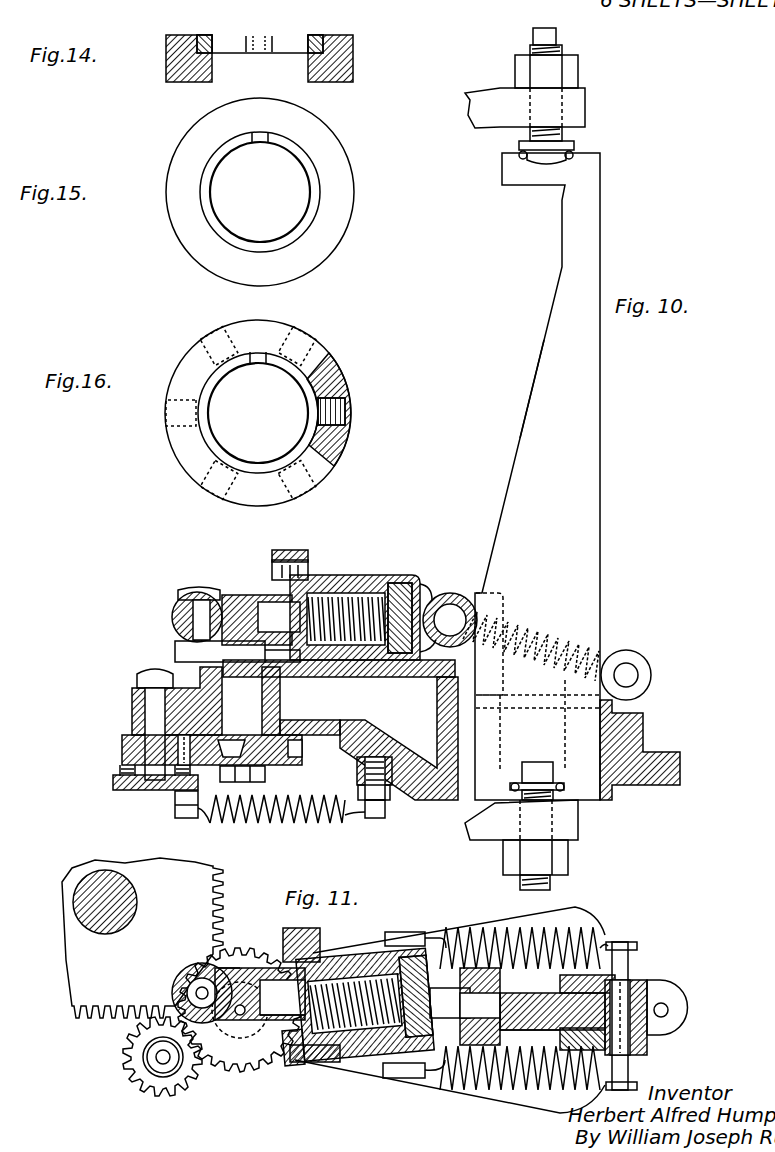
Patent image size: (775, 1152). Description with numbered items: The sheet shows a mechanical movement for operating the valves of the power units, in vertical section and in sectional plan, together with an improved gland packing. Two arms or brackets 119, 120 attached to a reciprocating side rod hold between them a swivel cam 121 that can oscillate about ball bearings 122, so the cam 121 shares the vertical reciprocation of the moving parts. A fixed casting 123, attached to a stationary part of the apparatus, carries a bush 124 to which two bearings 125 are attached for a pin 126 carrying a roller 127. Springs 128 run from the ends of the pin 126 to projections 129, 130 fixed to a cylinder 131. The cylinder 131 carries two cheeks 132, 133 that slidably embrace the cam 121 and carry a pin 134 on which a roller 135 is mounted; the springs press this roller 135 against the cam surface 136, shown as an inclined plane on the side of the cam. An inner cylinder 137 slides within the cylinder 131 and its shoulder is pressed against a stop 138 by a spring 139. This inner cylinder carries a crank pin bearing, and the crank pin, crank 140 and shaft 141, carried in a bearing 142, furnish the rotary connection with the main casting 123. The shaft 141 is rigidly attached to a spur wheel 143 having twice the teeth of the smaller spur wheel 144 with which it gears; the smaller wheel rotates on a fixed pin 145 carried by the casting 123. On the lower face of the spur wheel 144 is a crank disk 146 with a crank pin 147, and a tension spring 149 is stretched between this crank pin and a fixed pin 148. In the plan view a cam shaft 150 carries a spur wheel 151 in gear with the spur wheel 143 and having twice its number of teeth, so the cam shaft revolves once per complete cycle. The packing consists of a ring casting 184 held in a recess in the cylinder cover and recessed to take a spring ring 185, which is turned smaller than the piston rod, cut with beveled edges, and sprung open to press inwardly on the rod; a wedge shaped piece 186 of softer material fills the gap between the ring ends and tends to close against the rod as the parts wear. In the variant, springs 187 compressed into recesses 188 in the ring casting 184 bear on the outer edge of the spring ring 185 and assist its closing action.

In FIG. 10, the arm or bracket 119 is at (585, 107).
In FIG. 10, the arm or bracket 120 is at (565, 828).
In FIG. 10, the swivel cam 121 is at (537, 476).
In FIG. 11, the swivel cam 121 is at (543, 1047).
In FIG. 10, the ball bearing 122 is at (590, 153).
In FIG. 10, the fixed casting 123 is at (340, 730).
In FIG. 11, the fixed casting 123 is at (360, 955).
In FIG. 10, the bush 124 is at (645, 736).
In FIG. 11, the bearing 125 is at (625, 962).
In FIG. 10, the pin 126 is at (628, 668).
In FIG. 11, the pin 126 is at (625, 1020).
In FIG. 10, the roller 127 is at (655, 675).
In FIG. 11, the roller 127 is at (655, 1000).
In FIG. 10, the spring 128 is at (540, 640).
In FIG. 11, the spring 128 is at (590, 936).
In FIG. 11, the projection 129 is at (398, 931).
In FIG. 11, the projection 130 is at (402, 1068).
In FIG. 10, the cylinder 131 is at (360, 580).
In FIG. 11, the cylinder 131 is at (305, 1058).
In FIG. 10, the cheek 132 is at (470, 598).
In FIG. 11, the cheek 132 is at (537, 1009).
In FIG. 11, the cheek 133 is at (552, 1029).
In FIG. 10, the pin 134 is at (480, 612).
In FIG. 11, the pin 134 is at (433, 940).
In FIG. 10, the roller 135 is at (445, 600).
In FIG. 11, the roller 135 is at (428, 1078).
In FIG. 10, the cam surface 136 is at (533, 386).
In FIG. 10, the inner cylinder 137 is at (322, 578).
In FIG. 11, the inner cylinder 137 is at (328, 1055).
In FIG. 10, the stop 138 is at (290, 558).
In FIG. 10, the spring 139 is at (398, 590).
In FIG. 11, the spring 139 is at (400, 1040).
In FIG. 10, the crank 140 is at (180, 650).
In FIG. 11, the crank 140 is at (265, 1032).
In FIG. 10, the shaft 141 is at (282, 692).
In FIG. 11, the shaft 141 is at (282, 1065).
In FIG. 10, the bearing 142 is at (284, 716).
In FIG. 11, the bearing 142 is at (236, 1062).
In FIG. 10, the spur wheel 143 is at (302, 752).
In FIG. 11, the spur wheel 143 is at (268, 950).
In FIG. 10, the spur wheel 144 is at (122, 750).
In FIG. 11, the spur wheel 144 is at (158, 1085).
In FIG. 10, the fixed pin 145 is at (150, 742).
In FIG. 11, the fixed pin 145 is at (155, 1060).
In FIG. 10, the crank disk 146 is at (113, 785).
In FIG. 10, the crank pin 147 is at (175, 805).
In FIG. 10, the fixed pin 148 is at (386, 812).
In FIG. 10, the tension spring 149 is at (270, 818).
In FIG. 11, the cam shaft 150 is at (138, 898).
In FIG. 11, the spur wheel 151 is at (205, 888).
In FIG. 14, the ring casting 184 is at (355, 62).
In FIG. 15, the ring casting 184 is at (335, 201).
In FIG. 16, the ring casting 184 is at (330, 356).
In FIG. 14, the spring ring 185 is at (308, 40).
In FIG. 15, the spring ring 185 is at (303, 163).
In FIG. 16, the spring ring 185 is at (205, 428).
In FIG. 14, the wedge shaped piece 186 is at (262, 37).
In FIG. 15, the wedge shaped piece 186 is at (254, 140).
In FIG. 16, the wedge shaped piece 186 is at (258, 365).
In FIG. 16, the spring 187 is at (350, 412).
In FIG. 16, the recess 188 is at (348, 386).